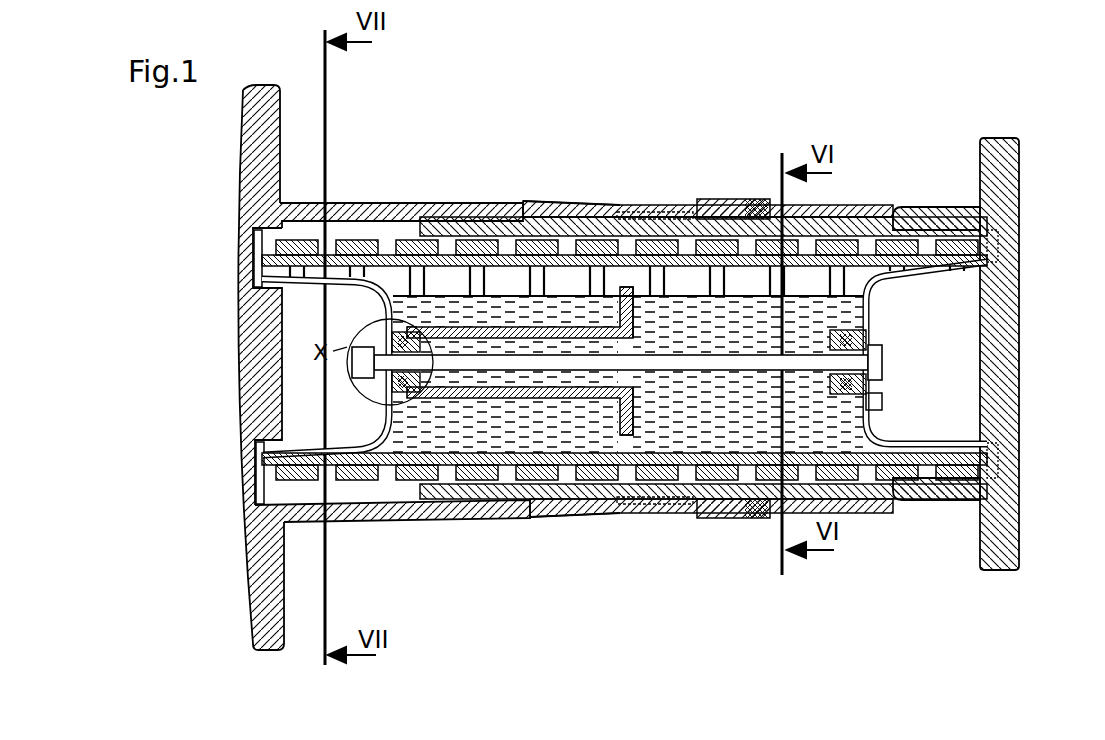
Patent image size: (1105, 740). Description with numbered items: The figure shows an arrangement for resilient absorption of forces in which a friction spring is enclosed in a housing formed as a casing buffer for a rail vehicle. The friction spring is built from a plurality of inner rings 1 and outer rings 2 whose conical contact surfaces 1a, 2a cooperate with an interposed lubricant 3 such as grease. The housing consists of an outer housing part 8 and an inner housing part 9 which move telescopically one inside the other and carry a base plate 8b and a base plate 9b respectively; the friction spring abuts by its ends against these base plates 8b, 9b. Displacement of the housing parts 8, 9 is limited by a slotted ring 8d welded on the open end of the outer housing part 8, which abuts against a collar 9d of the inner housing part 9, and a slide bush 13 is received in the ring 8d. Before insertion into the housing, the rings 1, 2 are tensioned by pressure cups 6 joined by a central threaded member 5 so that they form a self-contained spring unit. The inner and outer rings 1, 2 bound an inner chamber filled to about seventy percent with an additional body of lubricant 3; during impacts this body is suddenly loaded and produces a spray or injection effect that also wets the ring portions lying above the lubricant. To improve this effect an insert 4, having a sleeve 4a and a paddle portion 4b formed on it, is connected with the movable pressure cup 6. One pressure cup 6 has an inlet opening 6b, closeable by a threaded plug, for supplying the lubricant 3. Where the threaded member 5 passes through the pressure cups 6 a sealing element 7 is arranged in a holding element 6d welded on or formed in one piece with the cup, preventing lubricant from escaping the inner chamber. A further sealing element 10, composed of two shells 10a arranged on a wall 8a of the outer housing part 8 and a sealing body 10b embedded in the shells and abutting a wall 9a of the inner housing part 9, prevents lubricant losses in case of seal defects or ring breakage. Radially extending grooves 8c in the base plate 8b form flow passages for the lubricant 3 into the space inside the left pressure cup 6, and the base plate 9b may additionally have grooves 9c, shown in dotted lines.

The inner rings 1 is at (799, 480).
The conical contact surfaces 1a is at (333, 483).
The outer rings 2 is at (778, 490).
The conical contact surfaces 2a is at (302, 500).
The lubricant 3 is at (430, 418).
The insert 4 is at (489, 412).
The sleeve 4a is at (542, 399).
The paddle portion 4b is at (612, 400).
The threaded member 5 is at (862, 354).
The pressure cups 6 is at (322, 441).
The inlet opening 6b is at (883, 400).
The holding element 6d is at (395, 336).
The sealing element 7 is at (352, 390).
The outer housing part 8 is at (369, 206).
The wall 8a is at (652, 203).
The base plate 8b is at (262, 597).
The grooves 8c is at (296, 480).
The slotted ring 8d is at (586, 199).
The inner housing part 9 is at (900, 210).
The wall 9a is at (855, 216).
The base plate 9b is at (990, 163).
The grooves 9c is at (999, 467).
The collar 9d is at (481, 226).
The sealing element 10 is at (722, 525).
The shells 10a is at (731, 212).
The sealing body 10b is at (773, 205).
The slide bush 13 is at (648, 492).